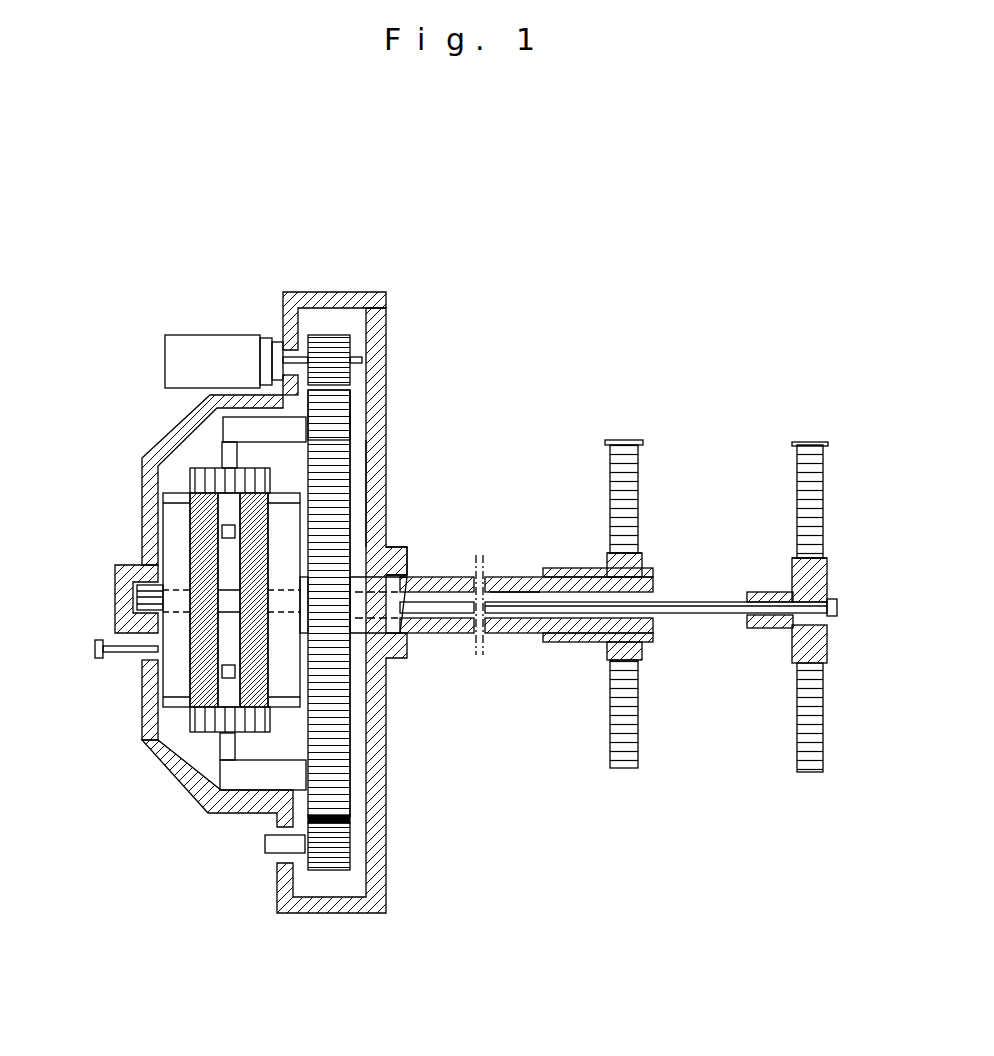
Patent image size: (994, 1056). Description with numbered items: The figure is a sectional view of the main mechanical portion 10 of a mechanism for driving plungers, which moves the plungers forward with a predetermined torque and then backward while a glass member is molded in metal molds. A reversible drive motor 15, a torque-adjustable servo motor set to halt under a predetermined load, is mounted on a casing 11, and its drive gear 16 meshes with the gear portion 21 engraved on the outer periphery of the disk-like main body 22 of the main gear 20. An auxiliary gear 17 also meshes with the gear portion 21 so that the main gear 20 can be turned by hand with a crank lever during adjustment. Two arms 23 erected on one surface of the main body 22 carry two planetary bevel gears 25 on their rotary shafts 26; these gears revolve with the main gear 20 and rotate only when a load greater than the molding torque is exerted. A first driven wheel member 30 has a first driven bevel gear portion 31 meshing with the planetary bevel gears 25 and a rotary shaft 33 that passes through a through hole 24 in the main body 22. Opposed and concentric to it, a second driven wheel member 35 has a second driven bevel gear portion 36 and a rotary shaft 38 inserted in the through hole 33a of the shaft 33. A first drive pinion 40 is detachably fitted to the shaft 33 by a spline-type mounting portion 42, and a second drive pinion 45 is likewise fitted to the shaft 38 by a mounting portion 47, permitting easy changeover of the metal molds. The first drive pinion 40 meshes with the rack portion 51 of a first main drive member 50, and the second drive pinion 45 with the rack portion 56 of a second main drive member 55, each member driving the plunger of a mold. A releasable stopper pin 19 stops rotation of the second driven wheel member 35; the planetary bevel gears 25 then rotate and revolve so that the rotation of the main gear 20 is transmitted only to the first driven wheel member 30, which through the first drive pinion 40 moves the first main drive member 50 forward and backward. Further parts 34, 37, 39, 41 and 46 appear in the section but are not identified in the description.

The main mechanical portion 10 is at (388, 292).
The casing 11 is at (318, 300).
The drive motor 15 is at (213, 350).
The drive gear 16 is at (357, 340).
The auxiliary gear 17 is at (300, 862).
The releasable stopper pin 19 is at (93, 657).
The main gear 20 is at (355, 452).
The gear portion 21 is at (337, 422).
The disk-like main body 22 is at (222, 437).
The arms 23 is at (187, 407).
The through hole 24 is at (343, 633).
The planetary bevel gears 25 is at (175, 505).
The rotary shafts 26 is at (200, 466).
The first driven wheel member 30 is at (402, 522).
The first driven bevel gear portion 31 is at (395, 481).
The rotary shaft 33 is at (407, 573).
The through hole 33a is at (510, 633).
The inner shaft 34 is at (662, 620).
The second driven wheel member 35 is at (174, 530).
The second driven bevel gear portion 36 is at (200, 553).
The yoke 37 is at (140, 690).
The rotary shaft 38 is at (115, 588).
The sleeve 39 is at (758, 630).
The first drive pinion 40 is at (641, 576).
The bearing 41 is at (611, 552).
The mounting portion 42 is at (590, 642).
The second drive pinion 45 is at (800, 580).
The bearing 46 is at (823, 547).
The mounting portion 47 is at (788, 640).
The first main drive member 50 is at (633, 441).
The rack portion 51 is at (637, 468).
The second main drive member 55 is at (808, 442).
The rack portion 56 is at (842, 468).